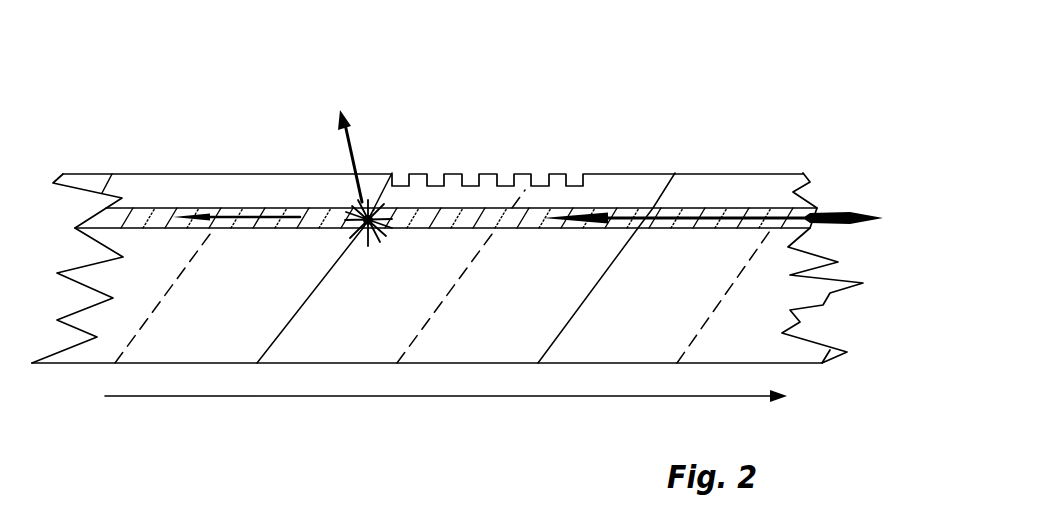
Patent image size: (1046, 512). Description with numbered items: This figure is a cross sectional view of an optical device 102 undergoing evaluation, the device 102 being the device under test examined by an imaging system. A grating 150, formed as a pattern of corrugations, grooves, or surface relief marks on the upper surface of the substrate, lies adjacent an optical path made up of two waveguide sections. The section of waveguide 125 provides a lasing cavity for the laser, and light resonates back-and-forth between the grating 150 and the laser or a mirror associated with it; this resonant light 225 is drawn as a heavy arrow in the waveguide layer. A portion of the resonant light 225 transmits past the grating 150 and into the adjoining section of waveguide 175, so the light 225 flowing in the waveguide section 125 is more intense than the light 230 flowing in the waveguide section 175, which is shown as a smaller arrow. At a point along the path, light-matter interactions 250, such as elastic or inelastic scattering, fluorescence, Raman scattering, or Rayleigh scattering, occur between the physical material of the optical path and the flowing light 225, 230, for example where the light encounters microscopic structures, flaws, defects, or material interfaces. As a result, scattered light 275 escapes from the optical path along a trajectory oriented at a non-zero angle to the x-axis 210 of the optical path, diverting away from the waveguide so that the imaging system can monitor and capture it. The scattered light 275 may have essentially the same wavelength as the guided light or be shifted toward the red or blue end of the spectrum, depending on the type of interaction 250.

The optical device 102 is at (148, 50).
The section of waveguide 125 is at (617, 208).
The grating 150 is at (498, 174).
The adjoining section of waveguide 175 is at (138, 210).
The x-axis 210 is at (368, 395).
The resonant light 225 is at (840, 212).
The light flowing in the waveguide section 230 is at (230, 207).
The light-matter interactions 250 is at (368, 220).
The scattered light 275 is at (338, 112).